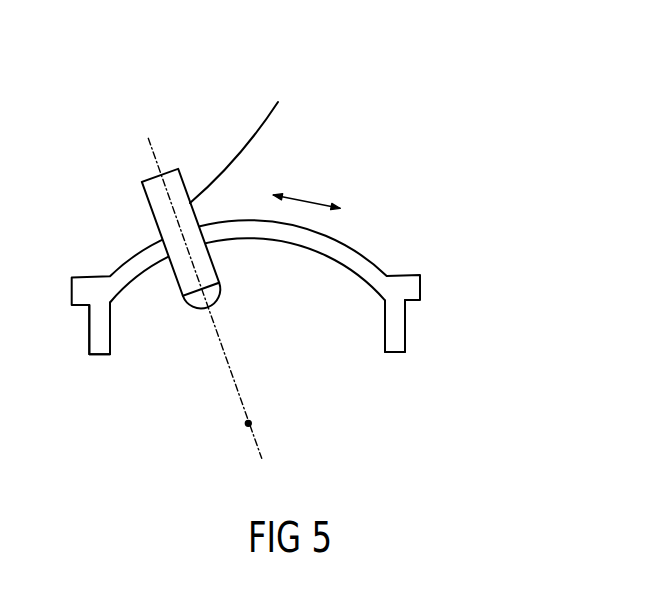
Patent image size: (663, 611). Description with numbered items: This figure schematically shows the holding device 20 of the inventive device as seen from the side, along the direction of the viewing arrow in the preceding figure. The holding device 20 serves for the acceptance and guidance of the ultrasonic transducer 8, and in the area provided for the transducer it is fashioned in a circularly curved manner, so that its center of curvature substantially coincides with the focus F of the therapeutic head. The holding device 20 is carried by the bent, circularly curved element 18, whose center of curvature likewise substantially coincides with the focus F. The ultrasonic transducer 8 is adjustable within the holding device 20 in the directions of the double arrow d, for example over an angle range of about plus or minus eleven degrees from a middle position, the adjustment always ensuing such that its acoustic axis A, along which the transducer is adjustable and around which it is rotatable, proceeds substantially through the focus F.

The ultrasonic transducer 8 is at (160, 210).
The element 18 is at (398, 332).
The holding device 20 is at (343, 250).
The transducer axis A is at (157, 163).
The double arrow d is at (312, 198).
The focus F is at (246, 424).